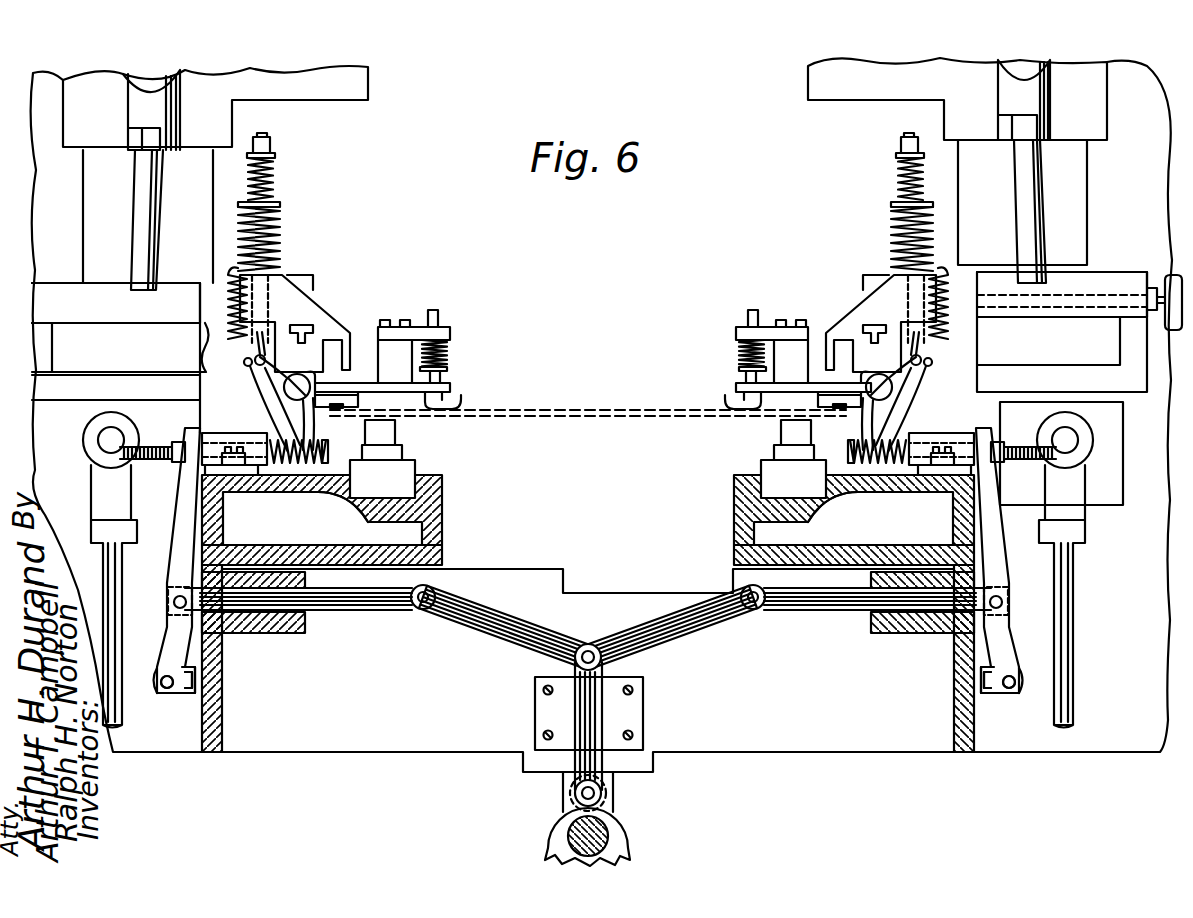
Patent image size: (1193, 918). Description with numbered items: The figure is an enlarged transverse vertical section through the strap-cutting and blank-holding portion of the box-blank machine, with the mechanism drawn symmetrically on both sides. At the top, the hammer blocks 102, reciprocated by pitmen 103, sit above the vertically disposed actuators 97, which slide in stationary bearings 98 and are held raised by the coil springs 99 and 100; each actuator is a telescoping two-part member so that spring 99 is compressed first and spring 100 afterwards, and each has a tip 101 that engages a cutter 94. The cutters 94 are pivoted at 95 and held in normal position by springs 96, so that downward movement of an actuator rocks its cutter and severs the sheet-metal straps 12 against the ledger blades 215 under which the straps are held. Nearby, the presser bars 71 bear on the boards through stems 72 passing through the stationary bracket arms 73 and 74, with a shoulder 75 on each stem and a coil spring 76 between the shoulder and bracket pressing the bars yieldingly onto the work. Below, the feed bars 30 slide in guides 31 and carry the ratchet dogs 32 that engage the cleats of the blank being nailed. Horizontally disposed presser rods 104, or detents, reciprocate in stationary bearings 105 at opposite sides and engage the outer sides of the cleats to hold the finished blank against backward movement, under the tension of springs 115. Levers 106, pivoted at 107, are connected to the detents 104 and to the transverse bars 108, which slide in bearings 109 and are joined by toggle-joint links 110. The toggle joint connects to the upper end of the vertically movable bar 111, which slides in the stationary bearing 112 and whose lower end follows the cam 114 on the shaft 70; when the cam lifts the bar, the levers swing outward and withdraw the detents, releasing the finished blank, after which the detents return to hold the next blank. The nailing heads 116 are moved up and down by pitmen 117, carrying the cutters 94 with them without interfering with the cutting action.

The sheet-metal straps 12 is at (338, 402).
The feed bars 30 is at (443, 484).
The guides 31 is at (443, 500).
The ratchet dogs 32 is at (395, 440).
The shaft 70 is at (573, 830).
The presser bars 71 is at (463, 403).
The stems 72 is at (433, 312).
The bracket arm 73 is at (450, 330).
The bracket arm 74 is at (451, 388).
The shoulder 75 is at (448, 369).
The coil spring 76 is at (448, 352).
The cutters 94 is at (290, 408).
The pivot 95 is at (284, 382).
The springs 96 is at (232, 301).
The actuators 97 is at (280, 212).
The stationary bearings 98 is at (272, 280).
The coil spring 99 is at (273, 172).
The coil spring 100 is at (281, 233).
The tip 101 is at (247, 362).
The hammer blocks 102 is at (365, 76).
The pitmen 103 is at (143, 225).
The presser rods 104 is at (280, 462).
The stationary bearings 105 is at (232, 470).
The levers 106 is at (185, 532).
The pivot 107 is at (166, 695).
The bars 108 is at (366, 612).
The bearings 109 is at (283, 633).
The toggle-joint links 110 is at (630, 633).
The vertically movable bar 111 is at (600, 707).
The stationary bearing 112 is at (535, 709).
The cam 114 is at (630, 830).
The springs 115 is at (320, 494).
The heads 116 is at (593, 350).
The pitmen 117 is at (104, 559).
The ledger blades 215 is at (335, 392).